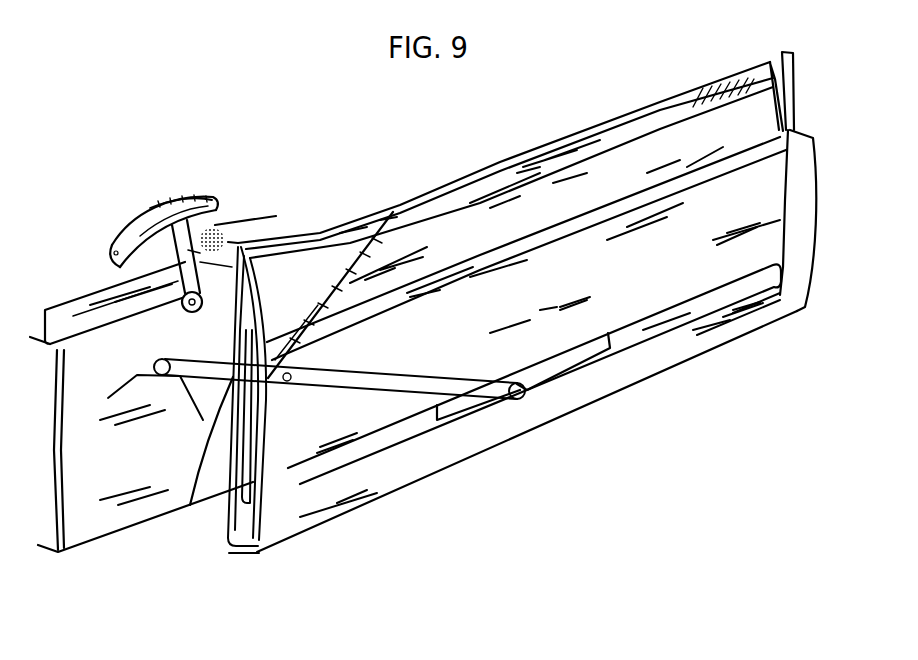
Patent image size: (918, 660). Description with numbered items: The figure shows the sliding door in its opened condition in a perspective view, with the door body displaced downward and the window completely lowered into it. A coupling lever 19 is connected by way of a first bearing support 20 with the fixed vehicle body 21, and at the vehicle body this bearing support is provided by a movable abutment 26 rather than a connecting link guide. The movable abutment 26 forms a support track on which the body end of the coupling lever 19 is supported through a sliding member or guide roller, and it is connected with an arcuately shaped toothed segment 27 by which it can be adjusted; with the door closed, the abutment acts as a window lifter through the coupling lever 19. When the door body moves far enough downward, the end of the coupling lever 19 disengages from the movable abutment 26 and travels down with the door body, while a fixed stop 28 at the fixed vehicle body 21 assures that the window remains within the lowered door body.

The coupling lever 19 is at (190, 505).
The first bearing support 20 is at (160, 360).
The fixed vehicle body 21 is at (100, 516).
The movable abutment 26 is at (189, 199).
The arcuately shaped toothed segment 27 is at (143, 214).
The fixed stop 28 is at (123, 382).